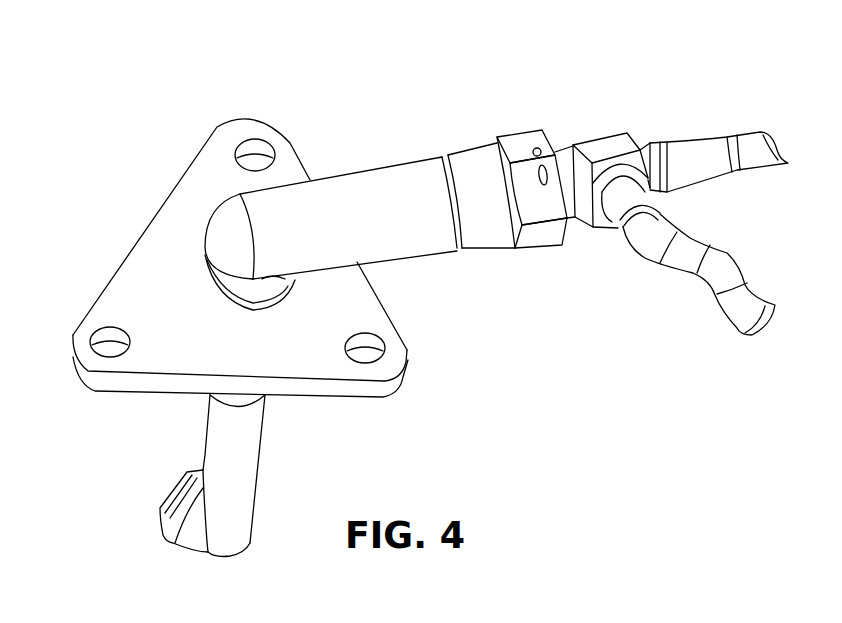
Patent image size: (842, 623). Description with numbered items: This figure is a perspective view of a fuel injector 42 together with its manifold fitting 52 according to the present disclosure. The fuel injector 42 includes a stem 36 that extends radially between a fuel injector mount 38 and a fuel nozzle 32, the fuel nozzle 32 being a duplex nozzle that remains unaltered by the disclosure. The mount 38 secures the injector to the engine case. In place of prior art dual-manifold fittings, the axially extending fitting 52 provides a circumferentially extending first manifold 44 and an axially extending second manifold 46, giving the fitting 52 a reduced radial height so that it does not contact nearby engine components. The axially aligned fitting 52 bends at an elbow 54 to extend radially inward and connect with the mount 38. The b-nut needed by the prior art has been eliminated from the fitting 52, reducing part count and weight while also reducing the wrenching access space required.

The fuel nozzle 32 is at (195, 487).
The stem 36 is at (243, 457).
The fuel injector mount 38 is at (407, 377).
The fuel injector 42 is at (216, 107).
The first manifold 44 is at (623, 217).
The second manifold 46 is at (698, 157).
The manifold fitting 52 is at (582, 88).
The elbow 54 is at (230, 221).